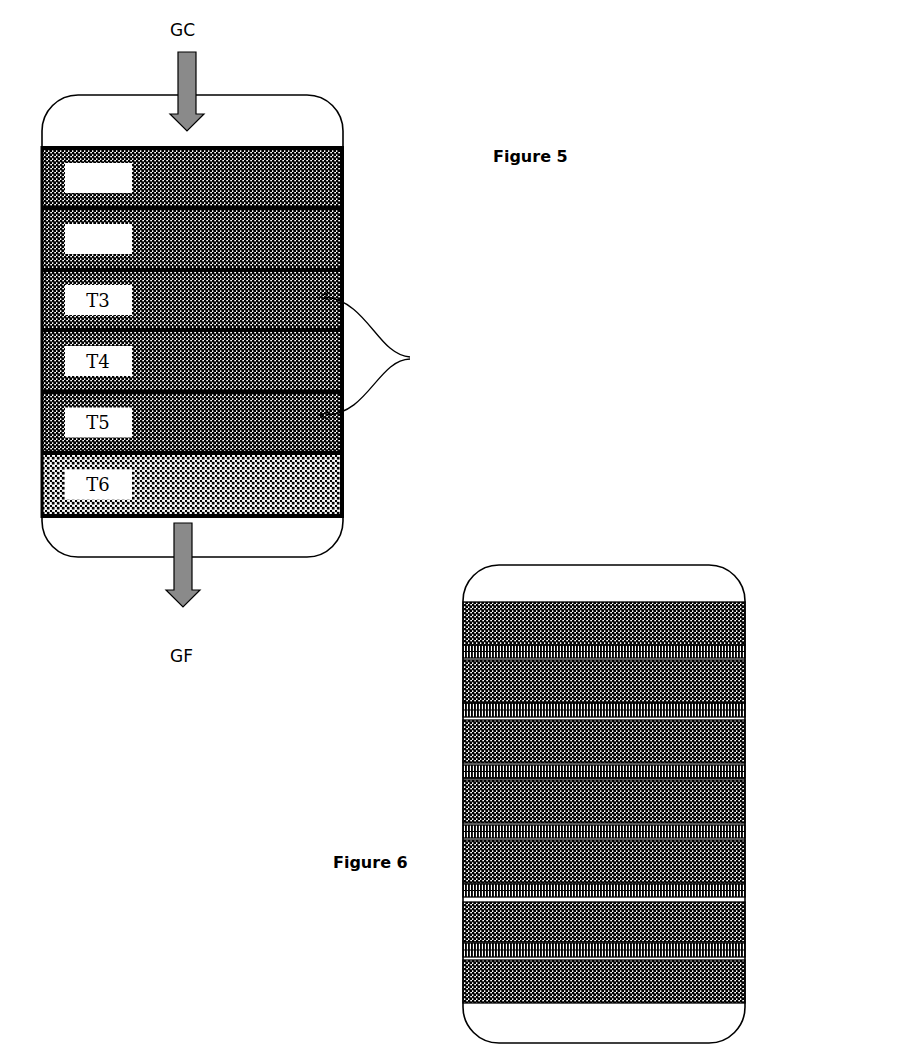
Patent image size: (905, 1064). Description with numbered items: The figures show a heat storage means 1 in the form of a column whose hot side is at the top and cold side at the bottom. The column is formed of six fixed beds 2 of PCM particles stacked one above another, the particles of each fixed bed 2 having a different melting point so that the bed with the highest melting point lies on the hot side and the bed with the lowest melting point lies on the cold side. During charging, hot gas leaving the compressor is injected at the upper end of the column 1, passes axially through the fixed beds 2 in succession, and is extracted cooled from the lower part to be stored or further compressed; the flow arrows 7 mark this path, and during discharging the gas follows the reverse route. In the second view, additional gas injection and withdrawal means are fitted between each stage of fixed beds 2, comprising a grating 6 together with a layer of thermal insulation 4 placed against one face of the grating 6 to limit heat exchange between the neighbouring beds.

In FIG. 5, the heat storage means 1 is at (348, 122).
In FIG. 6, the heat storage means 1 is at (737, 576).
In FIG. 5, the fixed beds 2 is at (348, 177).
In FIG. 6, the fixed beds 2 is at (739, 678).
In FIG. 6, the layer of thermal insulation 4 is at (744, 778).
In FIG. 6, the grating 6 is at (747, 824).
In FIG. 5, the gas flow arrow 7 is at (198, 82).